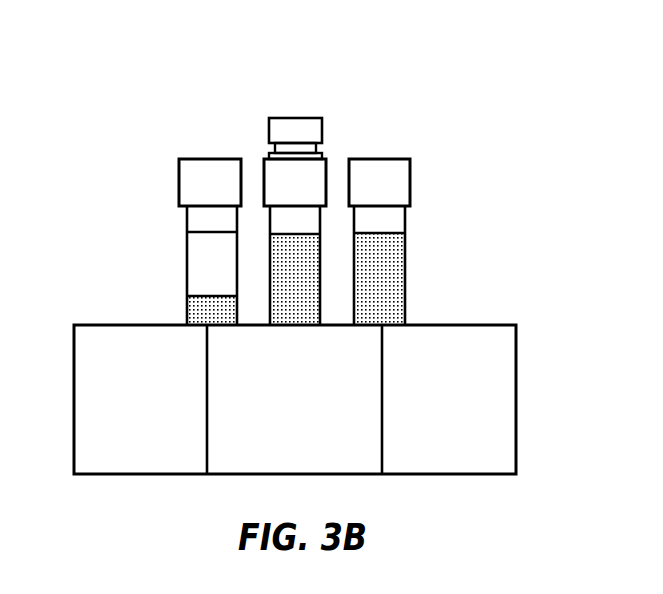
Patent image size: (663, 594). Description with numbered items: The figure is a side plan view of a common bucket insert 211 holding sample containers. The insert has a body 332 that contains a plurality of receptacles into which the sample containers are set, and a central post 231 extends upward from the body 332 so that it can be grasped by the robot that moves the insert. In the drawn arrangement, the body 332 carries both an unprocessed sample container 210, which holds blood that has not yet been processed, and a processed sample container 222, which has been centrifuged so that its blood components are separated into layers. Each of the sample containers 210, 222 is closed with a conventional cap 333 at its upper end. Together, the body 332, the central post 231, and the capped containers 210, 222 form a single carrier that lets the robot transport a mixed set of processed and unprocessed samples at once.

The common bucket insert 211 is at (484, 141).
The body 332 is at (110, 373).
The processed sample container 222 is at (186, 252).
The unprocessed sample container 210 is at (409, 252).
The cap 333 is at (273, 178).
The central post 231 is at (322, 136).